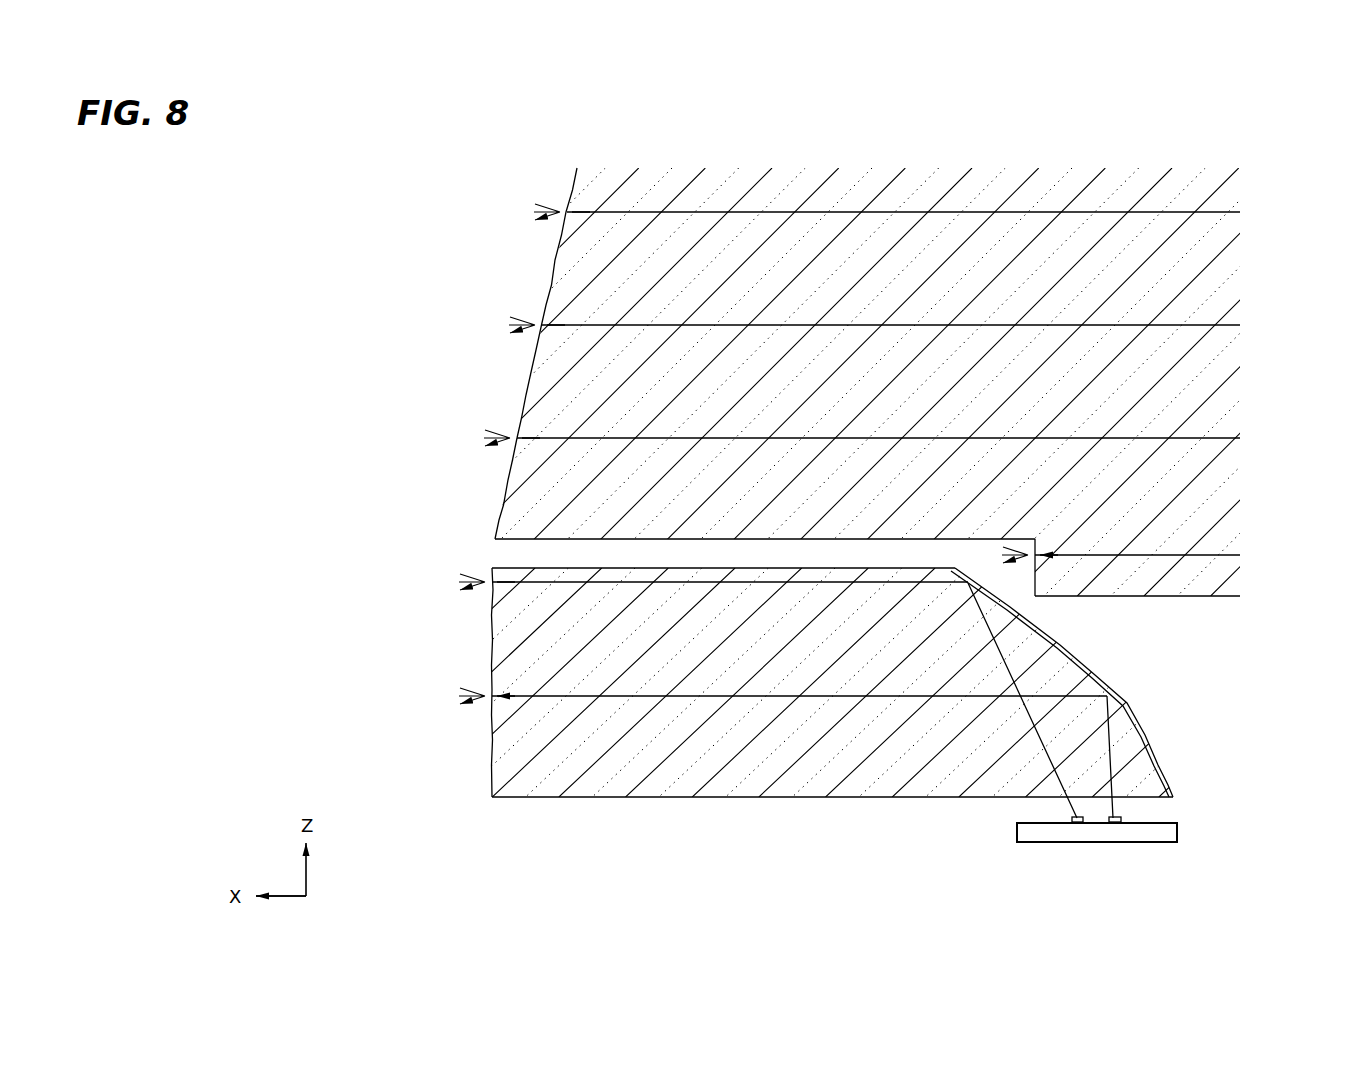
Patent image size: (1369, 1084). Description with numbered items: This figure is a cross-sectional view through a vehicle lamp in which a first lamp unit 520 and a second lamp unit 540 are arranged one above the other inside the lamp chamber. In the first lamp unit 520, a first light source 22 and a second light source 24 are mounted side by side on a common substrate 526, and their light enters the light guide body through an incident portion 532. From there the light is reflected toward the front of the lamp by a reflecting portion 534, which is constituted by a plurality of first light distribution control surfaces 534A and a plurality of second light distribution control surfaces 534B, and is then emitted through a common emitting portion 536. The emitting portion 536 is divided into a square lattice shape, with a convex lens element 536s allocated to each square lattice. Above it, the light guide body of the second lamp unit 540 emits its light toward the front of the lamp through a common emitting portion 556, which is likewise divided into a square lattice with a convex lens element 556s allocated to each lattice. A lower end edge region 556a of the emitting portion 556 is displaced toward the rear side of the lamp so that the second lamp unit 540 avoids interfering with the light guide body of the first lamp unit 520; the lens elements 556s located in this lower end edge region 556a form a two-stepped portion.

The second lamp unit 540 is at (723, 402).
The emitting portion 556 is at (527, 378).
The lens element 556s is at (503, 495).
The lower end edge region 556a is at (1018, 543).
The first lamp unit 520 is at (803, 715).
The emitting portion 536 is at (490, 667).
The lens element 536s is at (492, 779).
The reflecting portion 534 is at (1141, 682).
The first light distribution control surface 534A is at (1077, 657).
The second light distribution control surface 534B is at (1127, 703).
The incident portion 532 is at (1042, 798).
The first light source 22 is at (1085, 814).
The second light source 24 is at (1127, 816).
The substrate 526 is at (1181, 834).